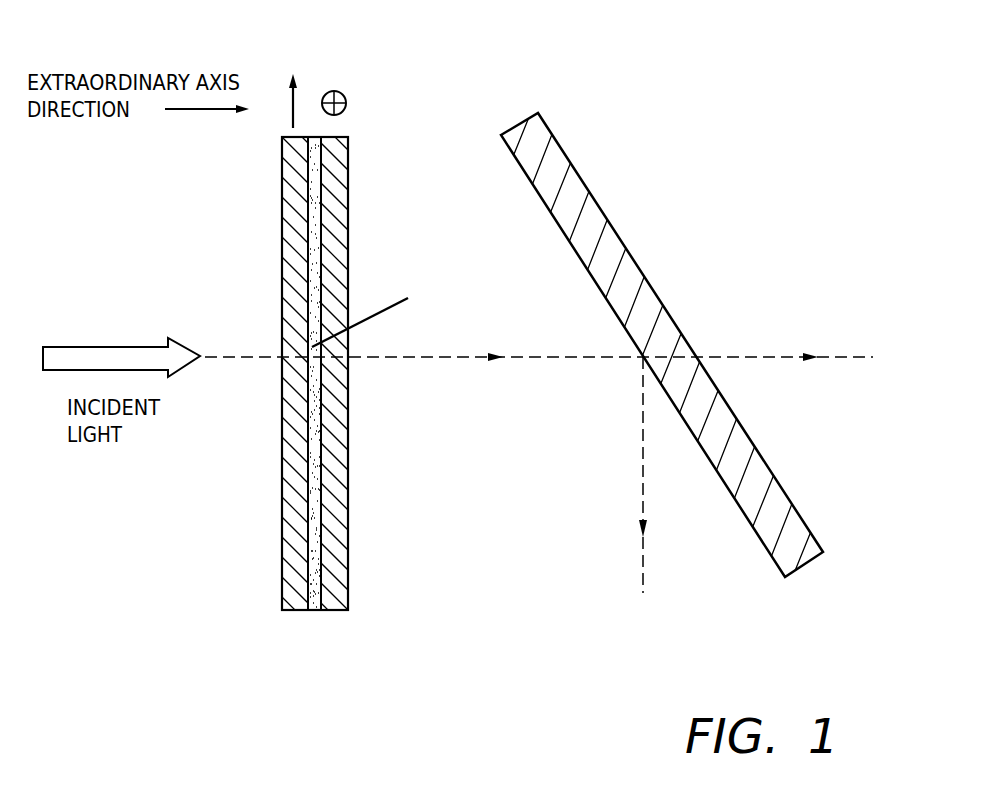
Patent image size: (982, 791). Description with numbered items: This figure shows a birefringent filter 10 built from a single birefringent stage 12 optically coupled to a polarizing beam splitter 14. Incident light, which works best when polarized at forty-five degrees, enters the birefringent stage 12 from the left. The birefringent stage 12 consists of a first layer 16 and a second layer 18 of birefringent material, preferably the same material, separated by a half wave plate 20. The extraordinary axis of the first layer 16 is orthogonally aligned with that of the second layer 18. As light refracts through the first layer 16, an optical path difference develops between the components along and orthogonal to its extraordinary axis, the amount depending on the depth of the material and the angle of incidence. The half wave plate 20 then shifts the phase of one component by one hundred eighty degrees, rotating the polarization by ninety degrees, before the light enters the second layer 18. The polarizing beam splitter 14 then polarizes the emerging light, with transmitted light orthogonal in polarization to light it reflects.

The birefringent filter 10 is at (655, 66).
The birefringent stage 12 is at (339, 401).
The polarizing beam splitter 14 is at (792, 531).
The first layer 16 is at (288, 538).
The second layer 18 is at (342, 520).
The half wave plate 20 is at (313, 443).